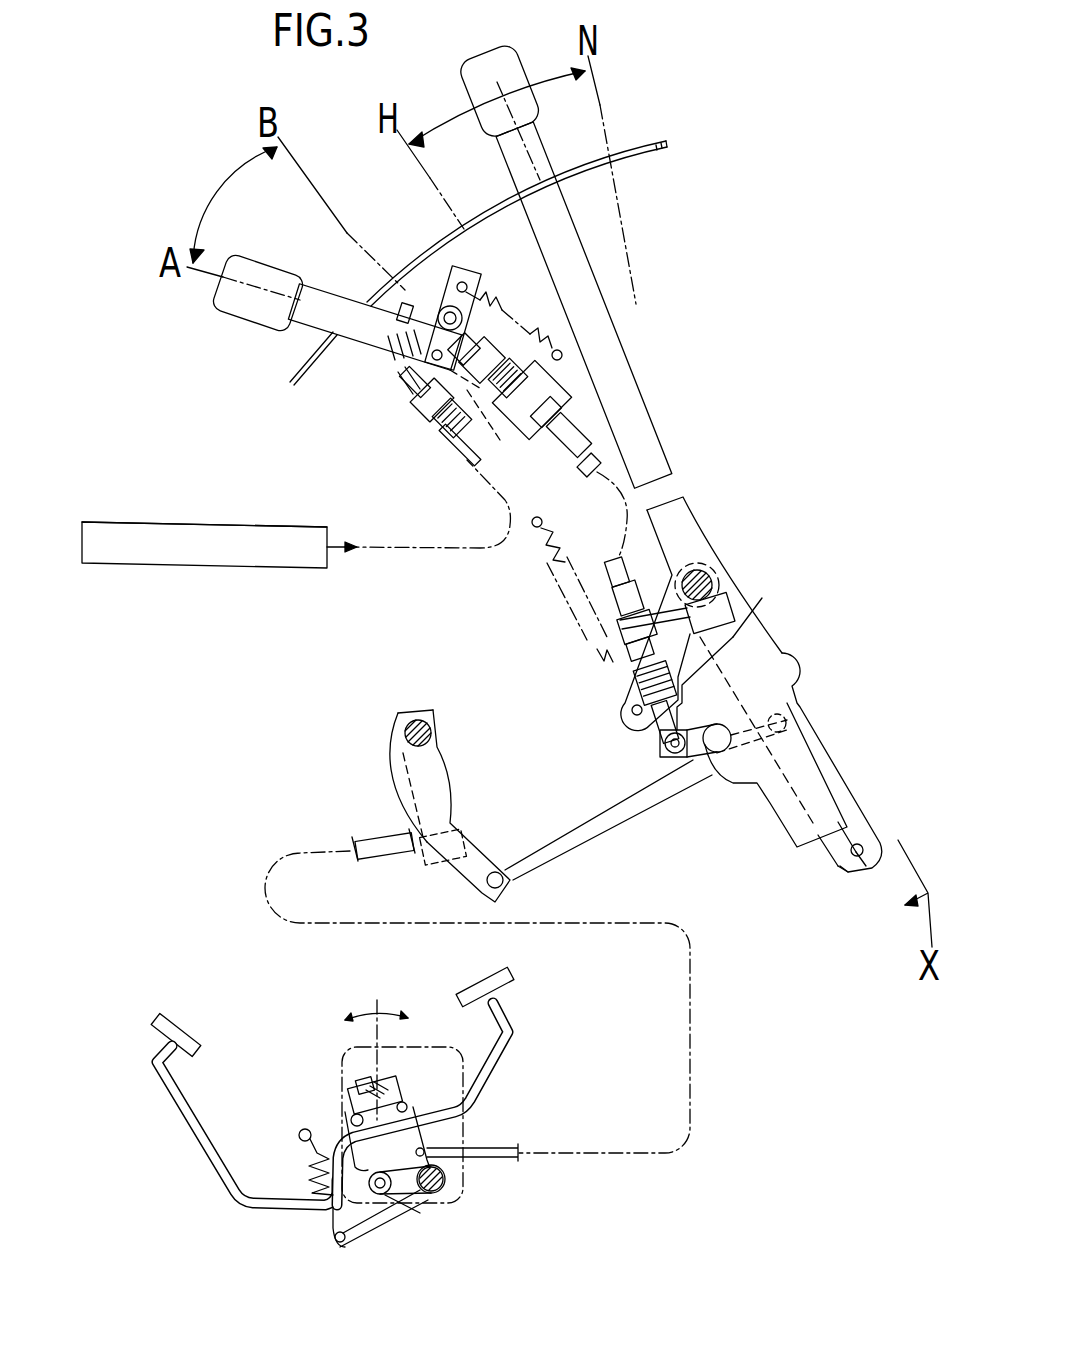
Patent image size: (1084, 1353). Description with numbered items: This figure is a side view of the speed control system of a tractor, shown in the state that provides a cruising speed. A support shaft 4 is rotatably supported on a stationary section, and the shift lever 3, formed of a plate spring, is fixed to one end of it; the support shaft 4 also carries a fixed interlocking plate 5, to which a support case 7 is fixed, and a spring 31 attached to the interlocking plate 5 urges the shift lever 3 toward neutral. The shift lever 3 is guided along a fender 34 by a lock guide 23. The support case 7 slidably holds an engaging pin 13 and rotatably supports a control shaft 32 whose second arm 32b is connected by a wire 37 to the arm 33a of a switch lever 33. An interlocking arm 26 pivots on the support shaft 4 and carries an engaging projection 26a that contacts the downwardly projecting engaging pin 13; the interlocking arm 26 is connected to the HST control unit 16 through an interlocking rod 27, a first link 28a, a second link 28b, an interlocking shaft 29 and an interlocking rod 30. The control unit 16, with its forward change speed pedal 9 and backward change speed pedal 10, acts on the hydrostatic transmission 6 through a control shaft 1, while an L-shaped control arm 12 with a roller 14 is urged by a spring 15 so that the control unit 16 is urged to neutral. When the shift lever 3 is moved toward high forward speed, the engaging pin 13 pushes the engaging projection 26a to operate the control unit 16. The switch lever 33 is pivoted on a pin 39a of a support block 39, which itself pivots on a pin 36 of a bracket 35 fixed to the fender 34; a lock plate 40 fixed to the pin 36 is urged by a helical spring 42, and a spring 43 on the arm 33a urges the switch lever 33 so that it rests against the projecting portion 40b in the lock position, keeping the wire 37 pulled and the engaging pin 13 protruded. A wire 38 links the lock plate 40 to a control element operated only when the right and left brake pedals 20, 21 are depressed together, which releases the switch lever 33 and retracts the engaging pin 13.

The control shaft 1 is at (353, 1083).
The shift lever 3 is at (627, 355).
The support shaft 4 is at (703, 577).
The interlocking plate 5 is at (767, 623).
The hydrostatic transmission 6 is at (460, 1133).
The support case 7 is at (767, 810).
The forward change speed pedal 9 is at (188, 1018).
The backward change speed pedal 10 is at (475, 983).
The control arm 12 is at (373, 1223).
The engaging pin 13 is at (820, 847).
The roller 14 is at (417, 1193).
The spring 15 is at (303, 1157).
The HST control unit 16 is at (417, 1100).
The right brake pedal 20 is at (233, 568).
The left brake pedal 21 is at (204, 594).
The lock guide 23 is at (558, 172).
The interlocking arm 26 is at (847, 873).
The engaging projection 26a is at (860, 860).
The interlocking rod 27 is at (583, 837).
The first link 28a is at (427, 780).
The second link 28b is at (453, 803).
The interlocking shaft 29 is at (430, 733).
The interlocking rod 30 is at (373, 838).
The spring 31 is at (597, 655).
The control shaft 32 is at (717, 747).
The second arm 32b is at (662, 750).
The switch lever 33 is at (245, 317).
The arm 33a is at (463, 266).
The fender 34 is at (654, 148).
The bracket 35 is at (467, 468).
The pin 36 is at (468, 427).
The wire 37 is at (592, 465).
The wire 38 is at (413, 550).
The support block 39 is at (425, 413).
The pin 39a is at (430, 357).
The lock plate 40 is at (407, 387).
The projecting portion 40b is at (383, 290).
The helical spring 42 is at (440, 437).
The spring 43 is at (490, 300).